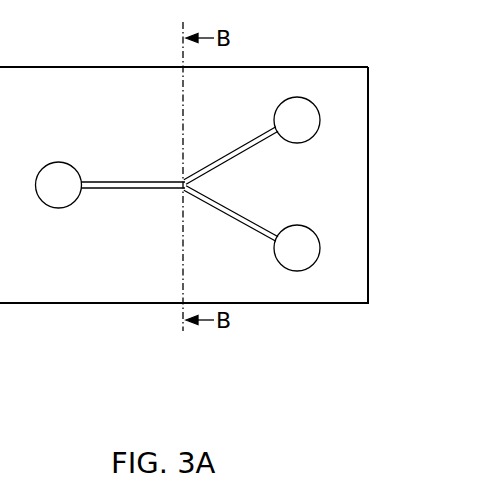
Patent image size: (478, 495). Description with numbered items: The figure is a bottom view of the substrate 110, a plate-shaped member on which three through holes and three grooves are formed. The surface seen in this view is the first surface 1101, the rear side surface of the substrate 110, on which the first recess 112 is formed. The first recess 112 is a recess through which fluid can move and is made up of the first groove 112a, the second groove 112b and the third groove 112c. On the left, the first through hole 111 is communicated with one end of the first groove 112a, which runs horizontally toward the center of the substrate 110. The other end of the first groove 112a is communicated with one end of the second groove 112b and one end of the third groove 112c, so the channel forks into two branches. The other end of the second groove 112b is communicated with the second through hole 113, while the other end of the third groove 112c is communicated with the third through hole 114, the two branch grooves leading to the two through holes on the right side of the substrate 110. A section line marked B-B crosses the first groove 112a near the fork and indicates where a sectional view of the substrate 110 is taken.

The substrate 110 is at (355, 72).
The first surface 1101 is at (279, 72).
The first through hole 111 is at (76, 168).
The first recess 112 is at (229, 280).
The first groove 112a is at (182, 188).
The second groove 112b is at (250, 224).
The third groove 112c is at (204, 176).
The second through hole 113 is at (303, 226).
The third through hole 114 is at (303, 98).